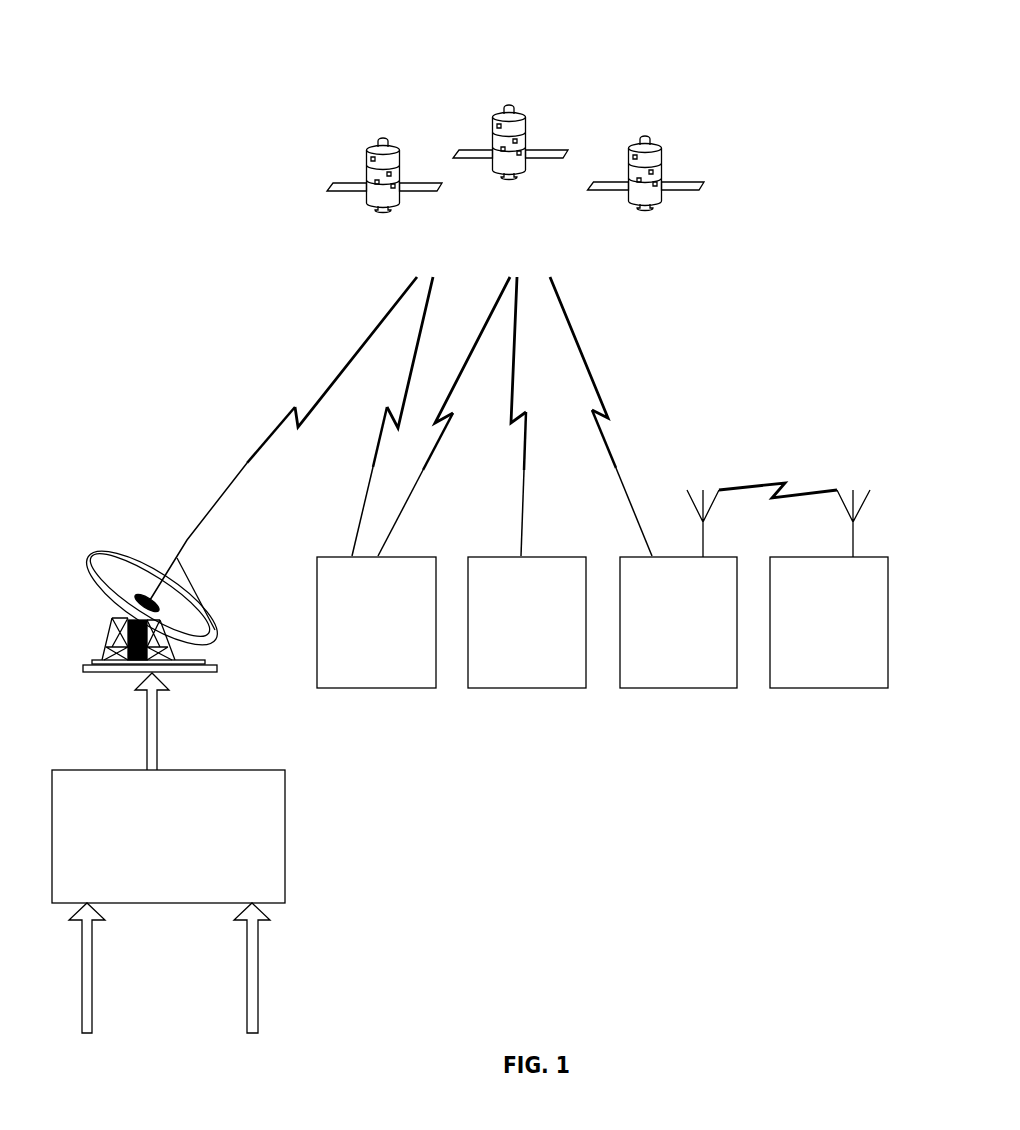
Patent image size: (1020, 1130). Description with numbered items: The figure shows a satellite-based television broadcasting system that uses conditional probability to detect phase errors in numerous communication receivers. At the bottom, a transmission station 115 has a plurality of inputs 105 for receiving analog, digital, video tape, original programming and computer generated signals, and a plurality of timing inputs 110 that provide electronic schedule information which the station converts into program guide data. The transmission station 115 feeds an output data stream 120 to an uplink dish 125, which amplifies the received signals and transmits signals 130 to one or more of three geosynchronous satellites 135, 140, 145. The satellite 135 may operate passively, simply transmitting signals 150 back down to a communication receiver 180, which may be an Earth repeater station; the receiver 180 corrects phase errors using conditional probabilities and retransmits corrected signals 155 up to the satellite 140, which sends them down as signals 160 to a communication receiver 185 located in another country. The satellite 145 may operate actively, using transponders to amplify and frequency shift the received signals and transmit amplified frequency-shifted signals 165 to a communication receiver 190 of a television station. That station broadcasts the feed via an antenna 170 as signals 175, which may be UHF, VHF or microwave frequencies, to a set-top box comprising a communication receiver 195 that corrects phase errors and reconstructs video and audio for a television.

The inputs 105 is at (92, 990).
The timing inputs 110 is at (258, 990).
The transmission station 115 is at (285, 830).
The output data stream 120 is at (158, 737).
The uplink dish 125 is at (200, 612).
The signals 130 is at (247, 463).
The satellite 135 is at (380, 138).
The satellite 140 is at (507, 107).
The satellite 145 is at (643, 138).
The signals 150 is at (365, 500).
The signals 155 is at (402, 518).
The signals 160 is at (520, 532).
The amplified frequency-shifted signals 165 is at (612, 418).
The antenna 170 is at (705, 540).
The signals 175 is at (770, 480).
The communication receiver 180 is at (357, 664).
The communication receiver 185 is at (507, 664).
The communication receiver 190 is at (659, 664).
The communication receiver 195 is at (809, 664).